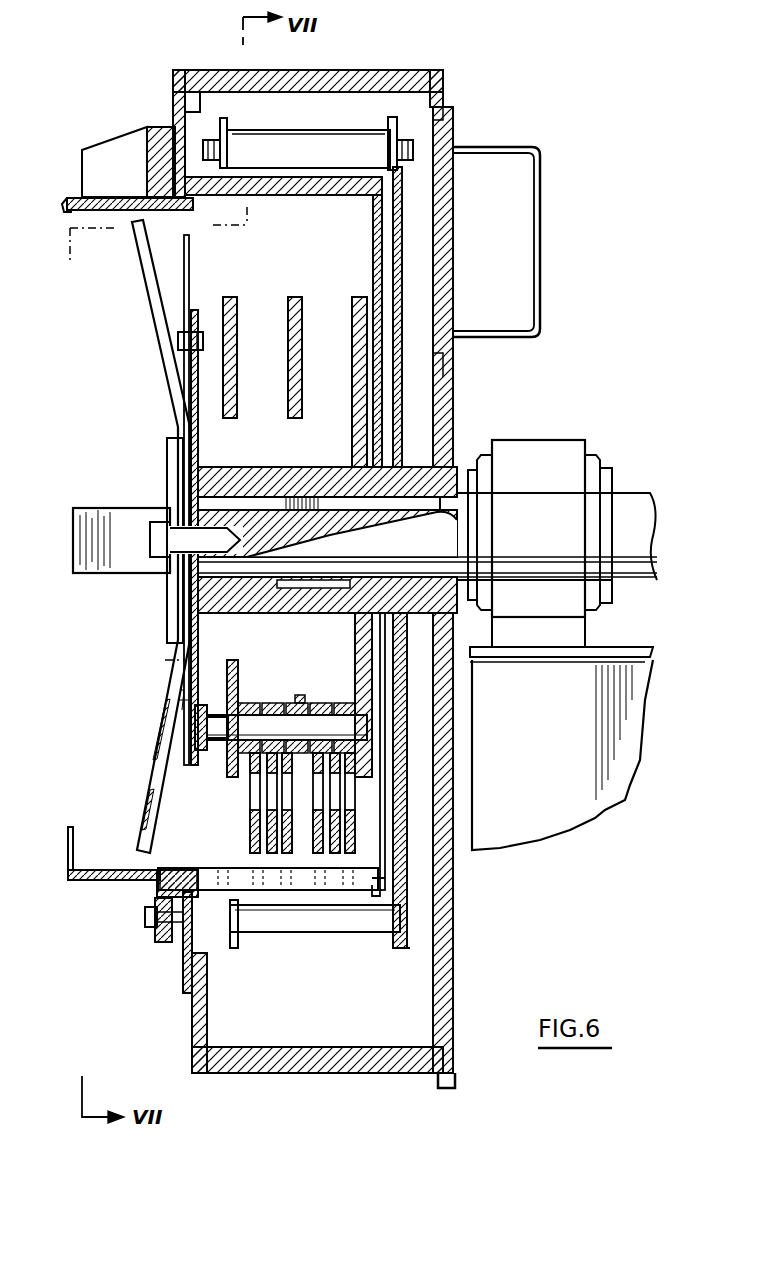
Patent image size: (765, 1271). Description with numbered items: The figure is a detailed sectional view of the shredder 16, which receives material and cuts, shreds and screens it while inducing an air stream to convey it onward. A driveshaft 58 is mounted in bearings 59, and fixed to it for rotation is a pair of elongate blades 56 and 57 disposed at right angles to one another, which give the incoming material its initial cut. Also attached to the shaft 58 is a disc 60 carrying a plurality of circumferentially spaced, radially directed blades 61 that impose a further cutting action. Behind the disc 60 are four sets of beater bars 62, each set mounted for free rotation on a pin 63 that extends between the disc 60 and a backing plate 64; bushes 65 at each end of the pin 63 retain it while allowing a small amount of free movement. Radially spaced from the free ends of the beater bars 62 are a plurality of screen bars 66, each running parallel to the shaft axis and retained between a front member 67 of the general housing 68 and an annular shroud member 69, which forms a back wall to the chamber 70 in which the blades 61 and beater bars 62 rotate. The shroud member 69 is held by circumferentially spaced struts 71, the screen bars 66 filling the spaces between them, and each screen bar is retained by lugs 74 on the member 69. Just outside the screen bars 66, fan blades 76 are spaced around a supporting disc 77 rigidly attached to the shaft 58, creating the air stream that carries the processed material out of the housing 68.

The shredder 16 is at (418, 59).
The elongate blade 56 is at (155, 305).
The elongate blade 57 is at (112, 516).
The driveshaft 58 is at (630, 500).
The bearings 59 is at (532, 447).
The disc 60 is at (192, 312).
The radially directed blades 61 is at (185, 262).
The beater bars 62 is at (247, 820).
The pin 63 is at (277, 722).
The backing plate 64 is at (363, 628).
The bushes 65 is at (227, 752).
The screen bars 66 is at (218, 868).
The front member 67 is at (152, 888).
The housing 68 is at (228, 1062).
The annular shroud member 69 is at (388, 857).
The chamber 70 is at (295, 361).
The struts 71 is at (276, 194).
The lugs 74 is at (378, 905).
The fan blades 76 is at (323, 143).
The supporting disc 77 is at (398, 217).